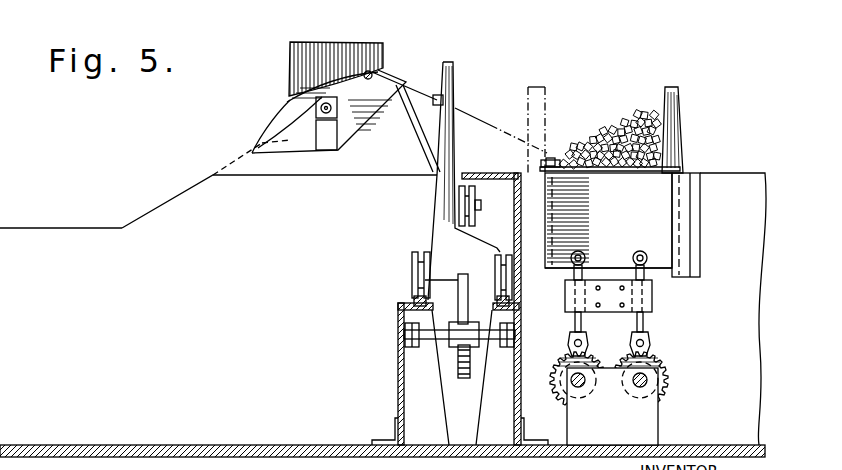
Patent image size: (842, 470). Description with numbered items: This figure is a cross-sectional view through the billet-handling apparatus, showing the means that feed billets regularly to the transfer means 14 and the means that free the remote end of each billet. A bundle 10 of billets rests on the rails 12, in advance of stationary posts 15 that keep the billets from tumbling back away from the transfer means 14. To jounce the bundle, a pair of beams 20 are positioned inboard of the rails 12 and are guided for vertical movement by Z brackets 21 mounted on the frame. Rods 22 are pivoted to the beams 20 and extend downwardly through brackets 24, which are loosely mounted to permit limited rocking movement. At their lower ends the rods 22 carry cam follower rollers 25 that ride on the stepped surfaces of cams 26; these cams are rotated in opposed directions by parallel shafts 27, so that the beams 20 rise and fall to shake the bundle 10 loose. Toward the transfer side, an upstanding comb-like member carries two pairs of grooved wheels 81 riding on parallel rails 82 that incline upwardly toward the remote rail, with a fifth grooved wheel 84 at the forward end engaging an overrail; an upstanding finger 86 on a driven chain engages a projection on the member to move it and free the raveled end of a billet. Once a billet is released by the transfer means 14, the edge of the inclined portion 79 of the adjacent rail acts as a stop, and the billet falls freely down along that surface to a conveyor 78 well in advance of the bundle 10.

The bundle of billets 10 is at (630, 110).
The rails 12 is at (737, 173).
The transfer means 14 is at (400, 55).
The stationary posts 15 is at (676, 122).
The beams 20 is at (645, 210).
The Z brackets 21 is at (550, 214).
The rods 22 is at (636, 320).
The brackets 24 is at (653, 297).
The cam follower rollers 25 is at (589, 343).
The cams 26 is at (565, 398).
The parallel shafts 27 is at (582, 388).
The conveyor 78 is at (48, 228).
The inclined portion 79 is at (170, 200).
The grooved wheels 81 is at (410, 258).
The parallel rails 82 is at (412, 298).
The fifth grooved wheel 84 is at (477, 195).
The upstanding finger 86 is at (462, 276).